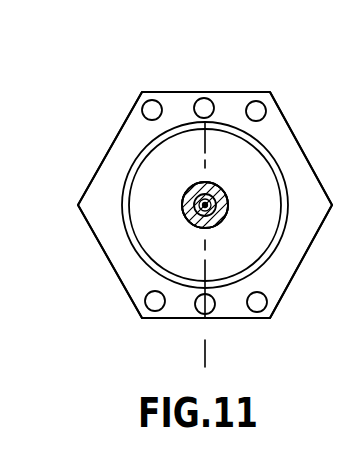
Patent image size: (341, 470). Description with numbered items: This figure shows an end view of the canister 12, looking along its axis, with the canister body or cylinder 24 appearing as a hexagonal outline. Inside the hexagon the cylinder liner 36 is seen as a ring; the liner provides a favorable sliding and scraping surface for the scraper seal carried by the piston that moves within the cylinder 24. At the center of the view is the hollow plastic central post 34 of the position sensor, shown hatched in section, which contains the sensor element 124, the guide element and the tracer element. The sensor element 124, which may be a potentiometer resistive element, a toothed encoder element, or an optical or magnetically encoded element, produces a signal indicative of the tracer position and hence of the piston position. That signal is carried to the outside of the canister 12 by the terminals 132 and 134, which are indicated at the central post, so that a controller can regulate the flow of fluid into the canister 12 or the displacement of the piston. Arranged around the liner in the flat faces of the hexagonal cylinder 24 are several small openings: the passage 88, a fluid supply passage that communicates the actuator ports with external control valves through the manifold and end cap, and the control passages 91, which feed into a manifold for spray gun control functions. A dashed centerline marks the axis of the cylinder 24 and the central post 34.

The canister 12 is at (283, 92).
The cylinder 24 is at (113, 268).
The central post 34 is at (193, 214).
The cylinder liner 36 is at (192, 190).
The passage 88 is at (200, 107).
The control passages 91 is at (255, 105).
The sensor element 124 is at (155, 146).
The terminal 132 is at (186, 194).
The terminal 134 is at (213, 210).